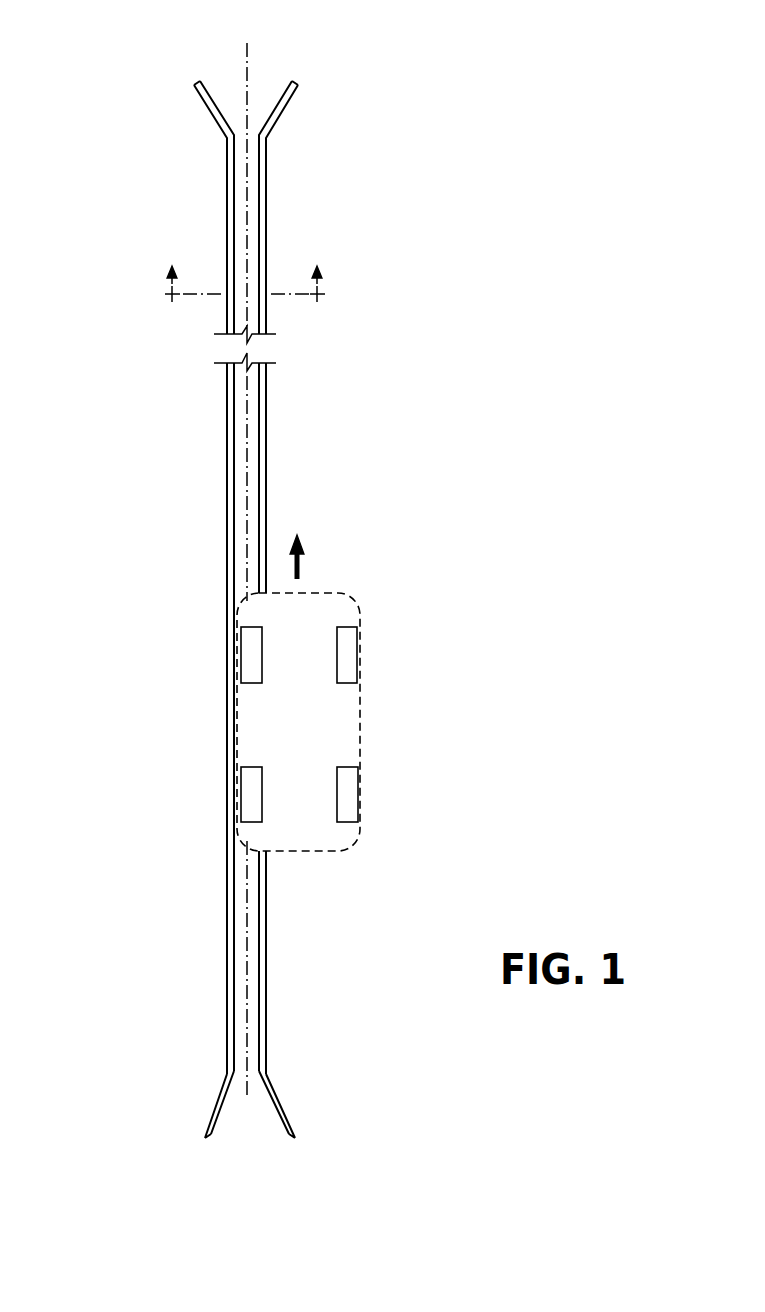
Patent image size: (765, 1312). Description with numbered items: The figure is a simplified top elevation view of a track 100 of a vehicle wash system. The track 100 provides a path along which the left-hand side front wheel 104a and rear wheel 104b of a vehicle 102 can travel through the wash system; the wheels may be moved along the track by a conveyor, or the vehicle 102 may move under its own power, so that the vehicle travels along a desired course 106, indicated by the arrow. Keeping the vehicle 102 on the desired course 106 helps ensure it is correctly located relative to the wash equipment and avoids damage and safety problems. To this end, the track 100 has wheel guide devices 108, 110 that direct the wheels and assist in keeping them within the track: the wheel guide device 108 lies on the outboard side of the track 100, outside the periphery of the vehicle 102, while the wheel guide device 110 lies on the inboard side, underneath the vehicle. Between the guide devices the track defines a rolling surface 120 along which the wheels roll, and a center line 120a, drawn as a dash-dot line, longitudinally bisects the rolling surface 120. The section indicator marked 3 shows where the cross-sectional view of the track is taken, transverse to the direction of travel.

The track 100 is at (79, 164).
The vehicle 102 is at (314, 738).
The front wheel 104a is at (250, 652).
The rear wheel 104b is at (252, 793).
The desired course 106 is at (305, 563).
The wheel guide device 108 is at (222, 1102).
The wheel guide device 110 is at (282, 1102).
The rolling surface 120 is at (237, 1119).
The center line 120a is at (248, 58).
The section line 3- 3 is at (246, 271).